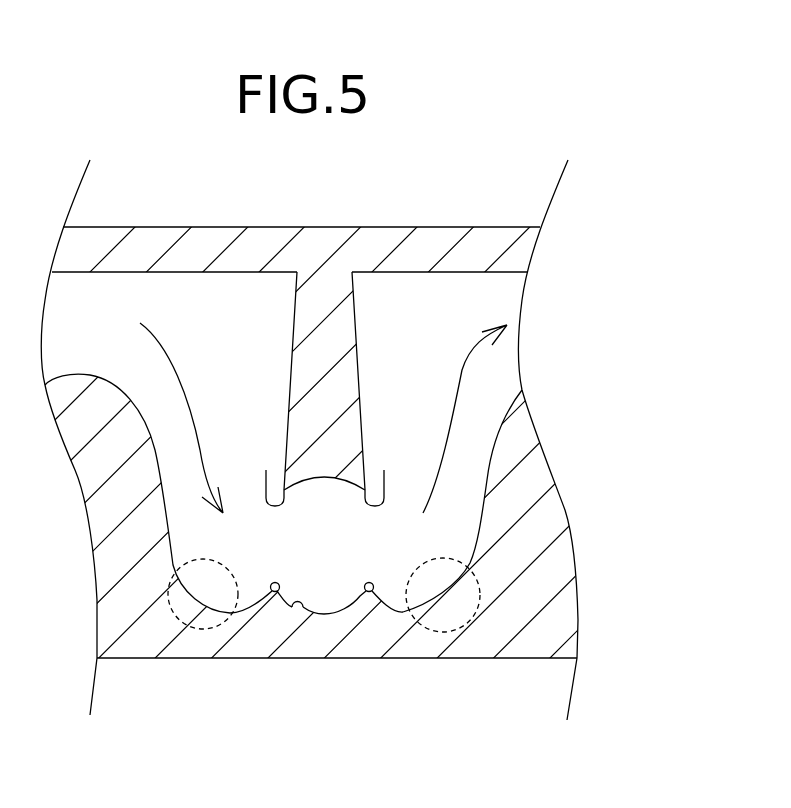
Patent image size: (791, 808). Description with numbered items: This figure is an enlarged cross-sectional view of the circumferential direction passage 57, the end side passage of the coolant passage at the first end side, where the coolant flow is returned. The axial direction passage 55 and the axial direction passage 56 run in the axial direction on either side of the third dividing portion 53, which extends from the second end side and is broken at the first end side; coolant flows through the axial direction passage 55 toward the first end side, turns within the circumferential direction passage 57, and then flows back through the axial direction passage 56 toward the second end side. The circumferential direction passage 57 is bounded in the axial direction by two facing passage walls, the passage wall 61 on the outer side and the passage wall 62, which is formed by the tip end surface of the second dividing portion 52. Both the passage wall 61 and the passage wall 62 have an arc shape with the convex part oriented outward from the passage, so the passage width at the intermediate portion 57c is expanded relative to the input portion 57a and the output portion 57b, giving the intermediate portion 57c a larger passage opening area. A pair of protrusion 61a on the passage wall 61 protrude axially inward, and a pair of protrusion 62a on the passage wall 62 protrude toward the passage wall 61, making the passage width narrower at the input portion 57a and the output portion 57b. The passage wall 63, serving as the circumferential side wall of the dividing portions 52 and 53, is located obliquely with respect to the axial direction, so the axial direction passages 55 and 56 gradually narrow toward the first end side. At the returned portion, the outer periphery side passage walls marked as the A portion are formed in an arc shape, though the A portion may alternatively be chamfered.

The second dividing portion 52 is at (162, 658).
The third dividing portion 53 is at (357, 315).
The axial direction passage 55 is at (224, 383).
The axial direction passage 56 is at (391, 383).
The circumferential direction passage 57 is at (341, 568).
The input portion 57a is at (249, 614).
The output portion 57b is at (400, 613).
The intermediate portion 57c is at (322, 588).
The passage wall 61 is at (303, 612).
The protrusion 61a is at (274, 592).
The passage wall 62 is at (347, 490).
The protrusion 62a is at (266, 470).
The passage wall 63 is at (157, 461).
The A portion A is at (185, 630).